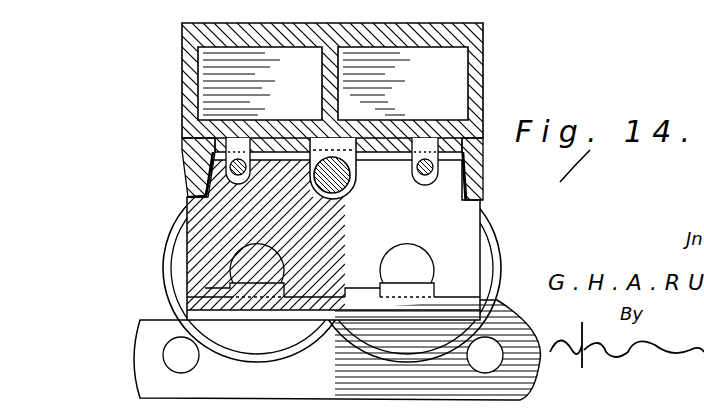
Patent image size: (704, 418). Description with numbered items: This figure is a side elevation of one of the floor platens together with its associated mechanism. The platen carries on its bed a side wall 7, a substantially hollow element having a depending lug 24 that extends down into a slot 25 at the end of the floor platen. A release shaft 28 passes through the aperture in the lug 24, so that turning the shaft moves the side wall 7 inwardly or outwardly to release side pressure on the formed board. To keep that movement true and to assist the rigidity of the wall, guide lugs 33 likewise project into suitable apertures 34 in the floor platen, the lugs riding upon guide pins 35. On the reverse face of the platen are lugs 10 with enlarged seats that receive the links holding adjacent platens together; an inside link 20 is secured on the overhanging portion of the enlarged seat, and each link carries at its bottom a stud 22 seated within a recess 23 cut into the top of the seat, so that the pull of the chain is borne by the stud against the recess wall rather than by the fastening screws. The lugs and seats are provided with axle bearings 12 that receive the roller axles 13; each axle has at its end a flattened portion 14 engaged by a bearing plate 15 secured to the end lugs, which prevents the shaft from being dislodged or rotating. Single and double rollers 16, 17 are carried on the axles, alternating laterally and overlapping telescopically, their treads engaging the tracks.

The side wall 7 is at (485, 80).
The lug 10 is at (200, 236).
The axle bearing 12 is at (228, 282).
The roller axle 13 is at (278, 257).
The flattened portion 14 is at (245, 300).
The bearing plate 15 is at (165, 320).
The single roller 16 is at (353, 354).
The double roller 17 is at (290, 352).
The inside link 20 is at (349, 179).
The stud 22 is at (326, 286).
The recess 23 is at (330, 272).
The depending lug 24 is at (343, 192).
The slot 25 is at (300, 138).
The release shaft 28 is at (311, 176).
The guide lug 33 is at (237, 180).
The aperture 34 is at (183, 146).
The guide pin 35 is at (256, 168).